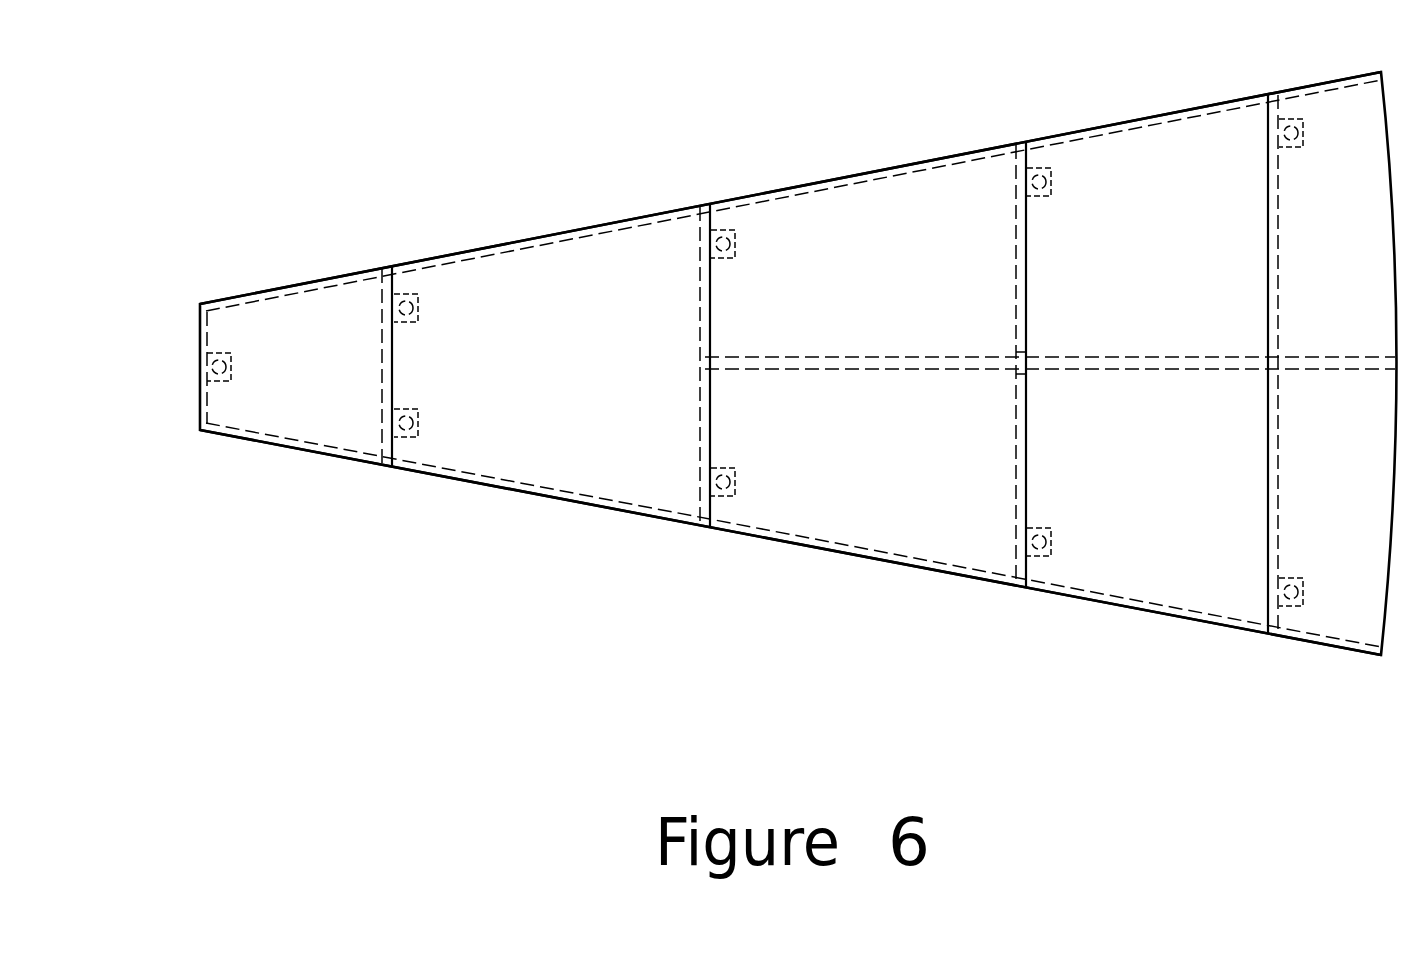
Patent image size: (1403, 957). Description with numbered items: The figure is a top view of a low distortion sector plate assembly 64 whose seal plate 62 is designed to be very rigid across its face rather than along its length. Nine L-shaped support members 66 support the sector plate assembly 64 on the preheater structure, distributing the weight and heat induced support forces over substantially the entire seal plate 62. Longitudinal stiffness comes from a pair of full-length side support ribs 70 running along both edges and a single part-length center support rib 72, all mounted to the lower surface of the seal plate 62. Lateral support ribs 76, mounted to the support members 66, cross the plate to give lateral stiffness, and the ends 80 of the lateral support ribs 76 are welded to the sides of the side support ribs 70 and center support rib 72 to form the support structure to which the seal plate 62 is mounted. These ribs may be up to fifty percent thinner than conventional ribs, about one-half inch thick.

The seal plate 62 is at (850, 460).
The low distortion sector plate assembly 64 is at (553, 95).
The L-shaped support members 66 is at (740, 244).
The side support ribs 70 is at (827, 178).
The center support rib 72 is at (888, 356).
The lateral support ribs 76 is at (1028, 482).
The ends of the lateral support ribs 80 is at (1028, 357).